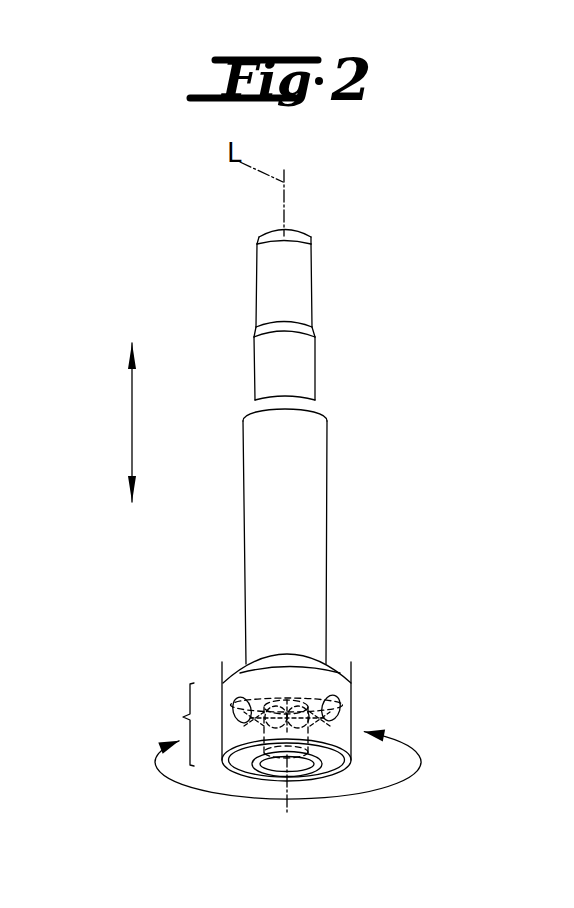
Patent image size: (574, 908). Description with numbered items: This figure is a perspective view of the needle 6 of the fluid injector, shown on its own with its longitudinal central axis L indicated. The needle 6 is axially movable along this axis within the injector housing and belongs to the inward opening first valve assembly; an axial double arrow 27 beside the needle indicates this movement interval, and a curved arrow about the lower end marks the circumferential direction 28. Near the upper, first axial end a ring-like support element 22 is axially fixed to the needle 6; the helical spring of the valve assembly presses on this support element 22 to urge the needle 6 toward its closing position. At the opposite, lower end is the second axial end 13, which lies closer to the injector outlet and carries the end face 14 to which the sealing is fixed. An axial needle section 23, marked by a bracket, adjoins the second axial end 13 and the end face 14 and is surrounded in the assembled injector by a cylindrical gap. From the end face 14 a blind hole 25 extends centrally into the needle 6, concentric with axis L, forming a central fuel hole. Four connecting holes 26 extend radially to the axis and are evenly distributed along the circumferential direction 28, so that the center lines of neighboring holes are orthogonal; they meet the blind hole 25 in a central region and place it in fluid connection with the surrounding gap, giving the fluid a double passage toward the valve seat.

The needle 6 is at (158, 232).
The ring-like support element 22 is at (294, 239).
The second axial end 13 is at (327, 772).
The end face 14 is at (266, 775).
The blind hole 25 is at (288, 697).
The connecting holes 26 is at (240, 700).
The axial movement direction 27 is at (131, 422).
The axial needle section 23 is at (184, 716).
The circumferential direction 28 is at (198, 790).